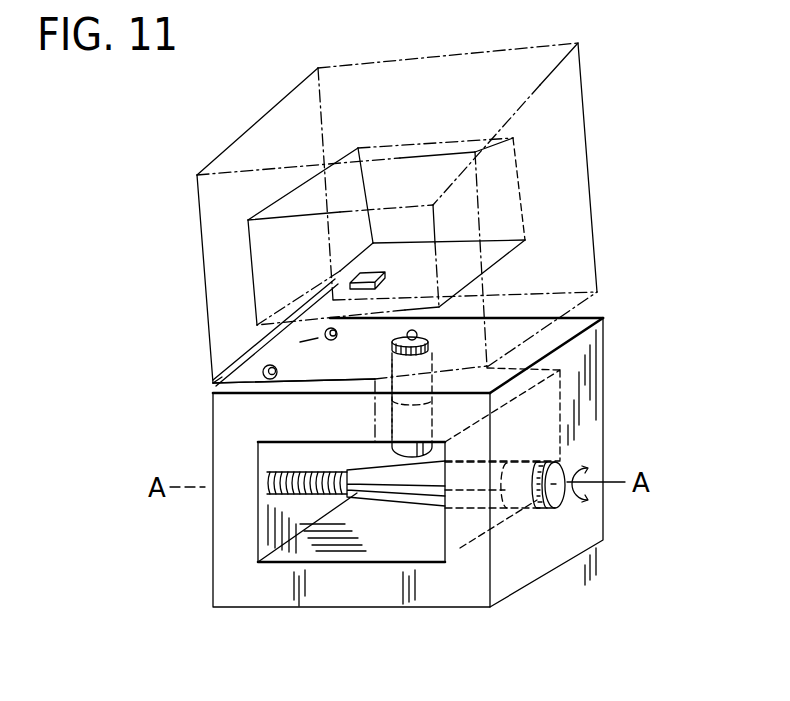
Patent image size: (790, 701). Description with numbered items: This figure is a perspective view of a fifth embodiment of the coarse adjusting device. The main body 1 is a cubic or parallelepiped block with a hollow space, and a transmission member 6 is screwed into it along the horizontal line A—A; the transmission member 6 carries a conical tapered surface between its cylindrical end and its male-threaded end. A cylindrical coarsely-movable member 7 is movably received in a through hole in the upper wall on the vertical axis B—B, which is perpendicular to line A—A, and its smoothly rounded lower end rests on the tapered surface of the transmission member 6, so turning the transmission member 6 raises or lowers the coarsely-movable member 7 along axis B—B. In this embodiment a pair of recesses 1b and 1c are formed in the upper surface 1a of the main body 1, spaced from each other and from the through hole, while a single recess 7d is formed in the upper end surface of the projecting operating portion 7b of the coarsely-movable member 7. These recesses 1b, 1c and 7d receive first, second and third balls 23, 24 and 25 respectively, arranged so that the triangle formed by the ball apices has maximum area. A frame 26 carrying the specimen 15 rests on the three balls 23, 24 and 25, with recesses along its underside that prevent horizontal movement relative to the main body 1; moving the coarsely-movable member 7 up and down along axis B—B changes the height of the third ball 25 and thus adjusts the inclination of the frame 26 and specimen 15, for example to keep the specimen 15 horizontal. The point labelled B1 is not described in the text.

The main body 1 is at (607, 378).
The upper surface of the main body 1a is at (578, 318).
The recess 1b is at (213, 383).
The recess 1c is at (325, 335).
The transmission member 6 is at (360, 500).
The coarsely-movable member 7 is at (258, 443).
The projecting end of the coarsely-movable member 7b is at (392, 375).
The recess 7d is at (430, 340).
The specimen 15 is at (350, 281).
The first ball 23 is at (267, 380).
The second ball 24 is at (300, 342).
The third ball 25 is at (392, 345).
The frame 26 is at (572, 160).
The straight line B— B is at (412, 330).
The point B1 is at (407, 529).